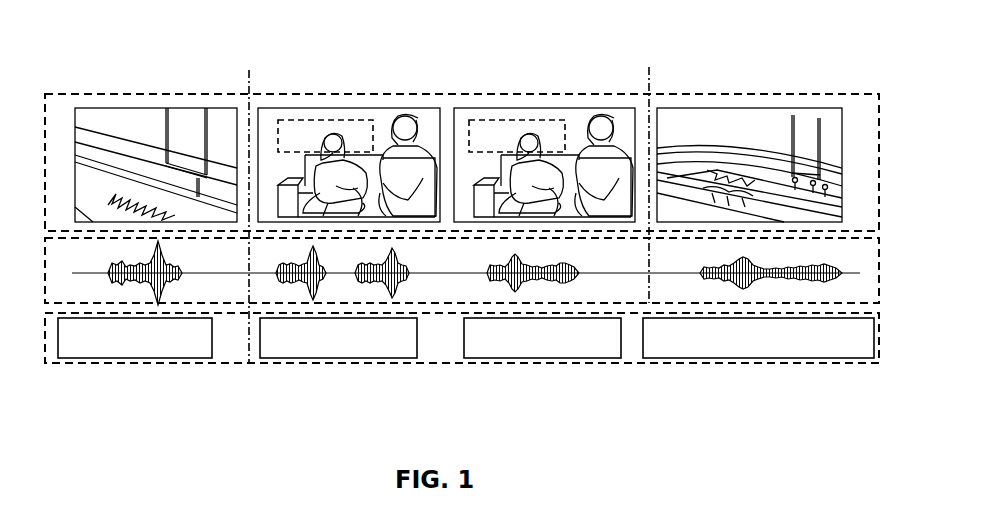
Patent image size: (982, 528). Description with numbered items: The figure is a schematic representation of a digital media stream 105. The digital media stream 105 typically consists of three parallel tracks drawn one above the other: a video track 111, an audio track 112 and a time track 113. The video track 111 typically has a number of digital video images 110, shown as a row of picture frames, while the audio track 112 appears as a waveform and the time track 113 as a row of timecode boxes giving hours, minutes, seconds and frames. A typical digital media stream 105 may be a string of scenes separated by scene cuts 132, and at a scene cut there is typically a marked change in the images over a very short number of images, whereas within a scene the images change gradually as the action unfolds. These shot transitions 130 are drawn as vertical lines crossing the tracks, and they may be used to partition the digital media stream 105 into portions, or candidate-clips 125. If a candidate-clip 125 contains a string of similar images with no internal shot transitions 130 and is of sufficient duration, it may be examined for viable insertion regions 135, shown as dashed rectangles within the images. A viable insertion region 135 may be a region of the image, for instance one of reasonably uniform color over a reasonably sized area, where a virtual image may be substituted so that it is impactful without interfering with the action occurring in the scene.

The digital media stream 105 is at (445, 437).
The digital video image 110 is at (185, 108).
The video track 111 is at (123, 92).
The audio track 112 is at (221, 304).
The time track 113 is at (105, 366).
The candidate-clip 125 is at (358, 92).
The shot transition 130 is at (248, 115).
The scene cut 132 is at (249, 362).
The viable insertion region 135 is at (487, 120).